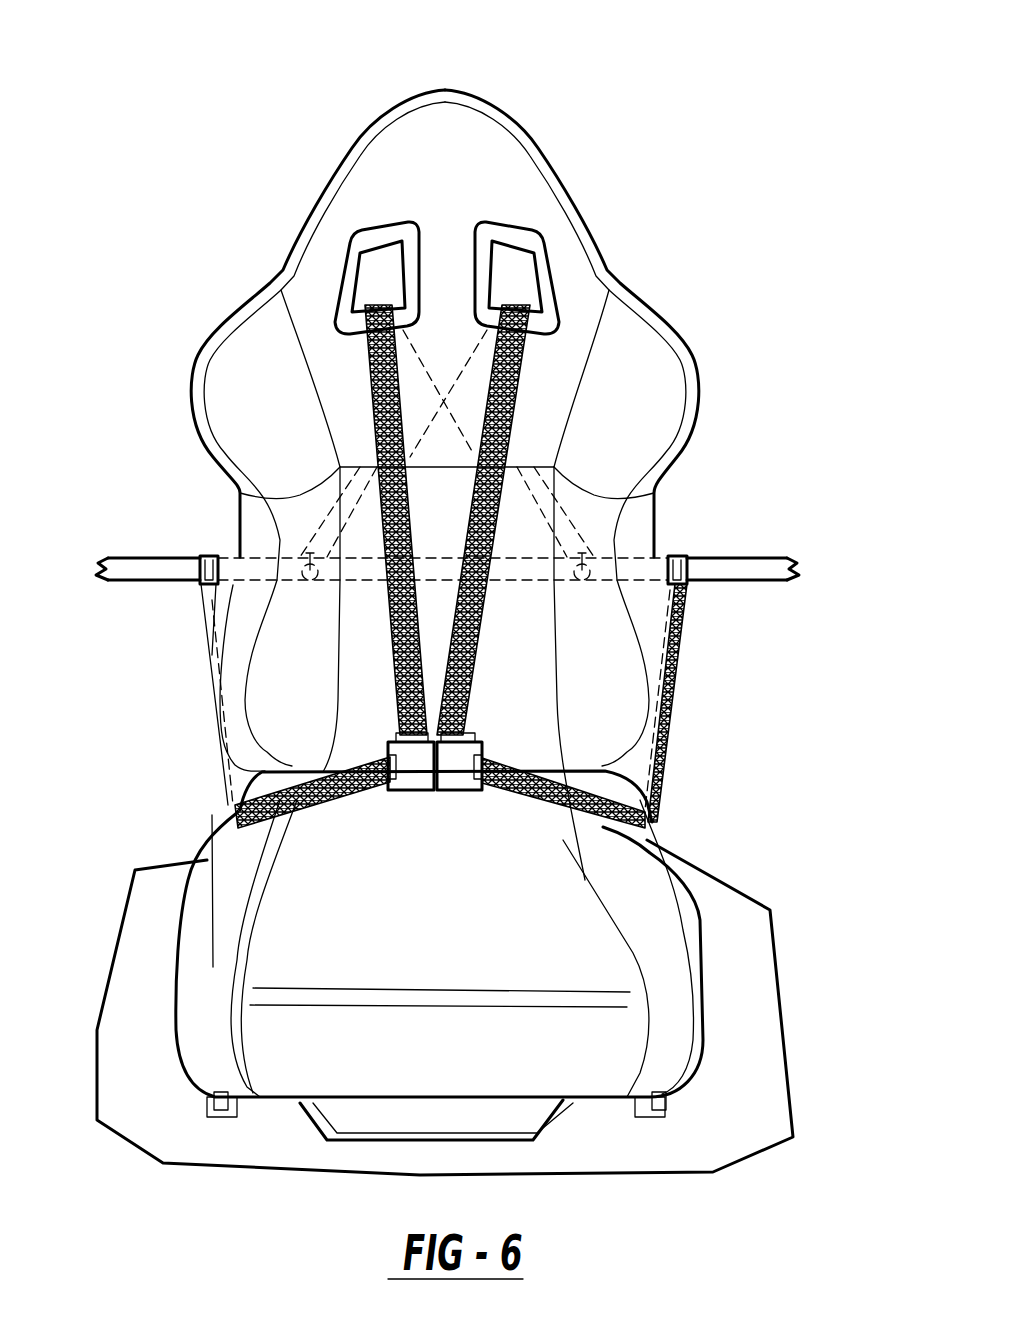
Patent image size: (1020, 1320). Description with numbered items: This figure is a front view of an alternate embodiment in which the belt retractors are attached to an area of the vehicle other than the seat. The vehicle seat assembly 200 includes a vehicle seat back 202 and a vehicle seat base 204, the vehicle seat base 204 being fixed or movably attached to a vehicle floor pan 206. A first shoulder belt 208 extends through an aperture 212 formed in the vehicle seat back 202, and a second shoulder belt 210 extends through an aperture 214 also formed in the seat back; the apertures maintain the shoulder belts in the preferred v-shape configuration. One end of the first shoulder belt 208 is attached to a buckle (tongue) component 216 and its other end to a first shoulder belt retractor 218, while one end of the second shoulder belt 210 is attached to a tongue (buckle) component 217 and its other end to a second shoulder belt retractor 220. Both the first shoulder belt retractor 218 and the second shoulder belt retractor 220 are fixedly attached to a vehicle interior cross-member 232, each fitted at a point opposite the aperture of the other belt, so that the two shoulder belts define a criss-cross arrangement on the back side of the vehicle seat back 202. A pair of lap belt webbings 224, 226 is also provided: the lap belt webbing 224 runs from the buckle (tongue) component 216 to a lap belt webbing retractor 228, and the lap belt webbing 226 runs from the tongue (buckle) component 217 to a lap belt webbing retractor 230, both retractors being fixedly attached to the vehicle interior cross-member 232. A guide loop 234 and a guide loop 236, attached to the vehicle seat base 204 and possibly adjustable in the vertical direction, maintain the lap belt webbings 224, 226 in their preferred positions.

The vehicle seat assembly 200 is at (800, 140).
The vehicle seat back 202 is at (622, 350).
The vehicle seat base 204 is at (700, 940).
The vehicle floor pan 206 is at (620, 1155).
The first shoulder belt 208 is at (385, 396).
The second shoulder belt 210 is at (517, 397).
The aperture 212 is at (352, 303).
The aperture 214 is at (547, 307).
The buckle (tongue) component 216 is at (405, 792).
The tongue (buckle) component 217 is at (455, 792).
The first shoulder belt retractor 218 is at (590, 553).
The second shoulder belt retractor 220 is at (302, 562).
The lap belt webbing 224 is at (253, 888).
The lap belt webbing 226 is at (590, 774).
The lap belt webbing retractor 228 is at (203, 578).
The lap belt webbing retractor 230 is at (662, 562).
The vehicle interior cross-member 232 is at (163, 570).
The guide loop 234 is at (240, 830).
The guide loop 236 is at (657, 830).